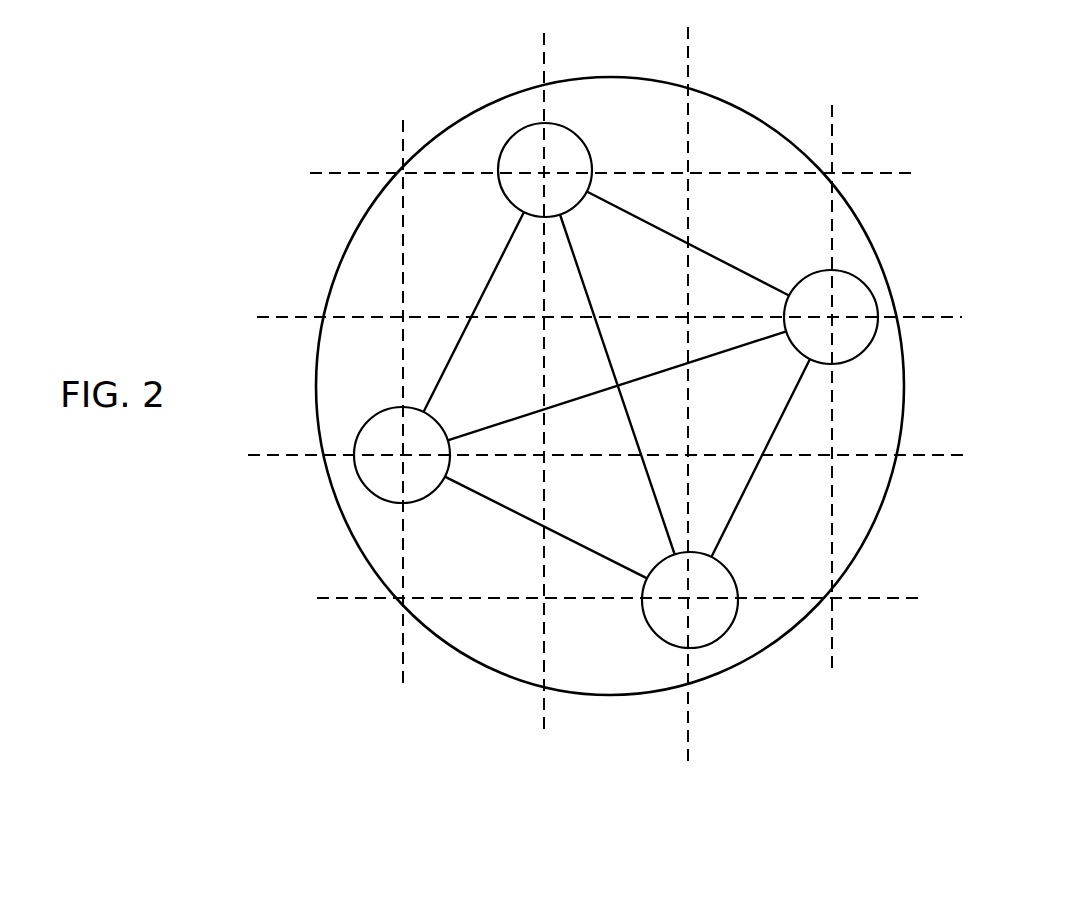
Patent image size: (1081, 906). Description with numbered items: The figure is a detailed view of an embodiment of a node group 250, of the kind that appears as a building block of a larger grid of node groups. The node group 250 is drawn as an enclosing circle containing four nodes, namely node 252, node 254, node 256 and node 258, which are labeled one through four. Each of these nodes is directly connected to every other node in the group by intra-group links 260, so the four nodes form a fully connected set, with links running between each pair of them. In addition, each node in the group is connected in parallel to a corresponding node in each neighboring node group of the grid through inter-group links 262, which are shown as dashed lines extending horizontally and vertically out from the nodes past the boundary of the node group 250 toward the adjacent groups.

The node group 250 is at (352, 195).
The node 252 is at (360, 482).
The node 254 is at (672, 647).
The node 256 is at (855, 360).
The node 258 is at (505, 150).
The intra-group links 260 is at (597, 327).
The inter-group links 262 is at (758, 180).